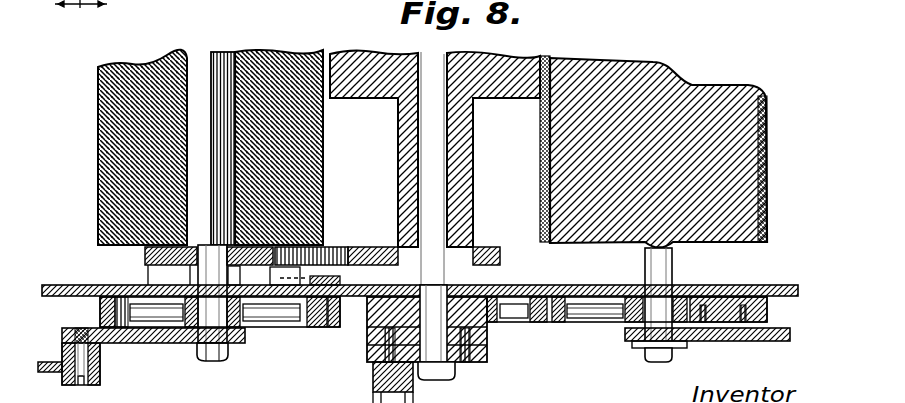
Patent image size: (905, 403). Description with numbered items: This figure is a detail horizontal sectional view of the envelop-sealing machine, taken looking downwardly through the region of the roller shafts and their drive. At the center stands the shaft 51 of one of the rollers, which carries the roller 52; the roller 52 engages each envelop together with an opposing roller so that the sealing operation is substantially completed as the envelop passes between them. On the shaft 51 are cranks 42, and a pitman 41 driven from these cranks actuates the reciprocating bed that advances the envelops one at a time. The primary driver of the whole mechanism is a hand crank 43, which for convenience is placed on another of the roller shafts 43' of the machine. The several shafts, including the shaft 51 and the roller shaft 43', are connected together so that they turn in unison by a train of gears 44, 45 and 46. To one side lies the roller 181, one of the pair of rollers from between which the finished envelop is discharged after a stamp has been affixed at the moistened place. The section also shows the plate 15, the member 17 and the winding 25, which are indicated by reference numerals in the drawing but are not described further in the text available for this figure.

The mounting plate 15 is at (47, 253).
The dimension arrow 17 is at (81, 17).
The coil winding 25 is at (279, 123).
The pitman 41 is at (50, 361).
The cranks 42 is at (145, 343).
The hand crank 43 is at (707, 353).
The roller shaft 43' is at (680, 319).
The gear 44 is at (597, 316).
The gear 45 is at (517, 320).
The gear 46 is at (285, 323).
The shaft 51 is at (213, 50).
The roller 52 is at (98, 141).
The roller 181 is at (767, 193).